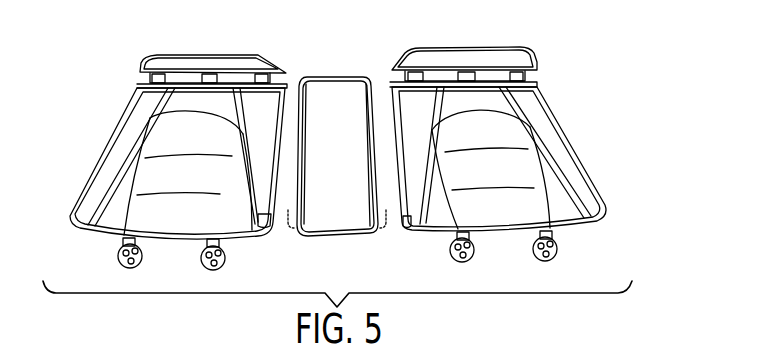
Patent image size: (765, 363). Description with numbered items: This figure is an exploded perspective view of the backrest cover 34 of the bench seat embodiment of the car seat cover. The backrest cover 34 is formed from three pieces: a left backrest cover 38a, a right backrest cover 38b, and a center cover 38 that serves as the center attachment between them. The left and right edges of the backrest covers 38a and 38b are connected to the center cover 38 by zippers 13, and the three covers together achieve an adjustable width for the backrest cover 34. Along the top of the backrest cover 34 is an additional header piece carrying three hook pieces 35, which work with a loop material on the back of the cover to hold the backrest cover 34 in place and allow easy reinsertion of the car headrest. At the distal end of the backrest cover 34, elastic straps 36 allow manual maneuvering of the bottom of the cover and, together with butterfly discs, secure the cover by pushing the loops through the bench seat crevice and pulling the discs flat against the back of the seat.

The backrest cover 34 is at (511, 25).
The hook pieces 35 is at (160, 77).
The backrest cover 38a is at (186, 135).
The right backrest cover 38b is at (494, 130).
The center cover 38 is at (342, 220).
The zippers 13 is at (273, 213).
The elastic straps 36 is at (202, 266).